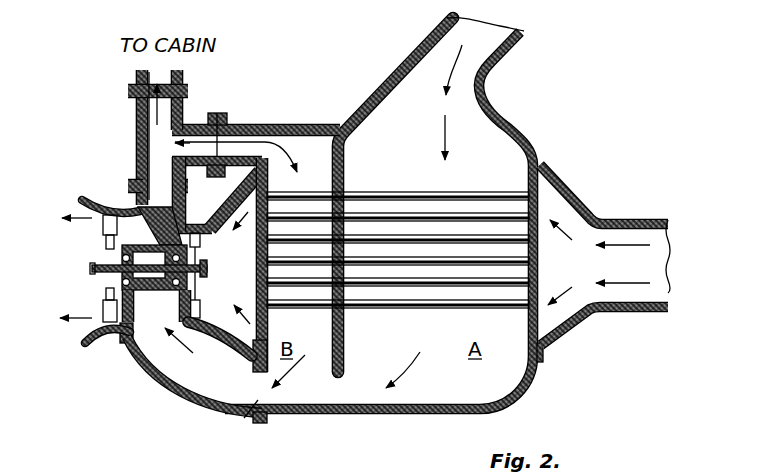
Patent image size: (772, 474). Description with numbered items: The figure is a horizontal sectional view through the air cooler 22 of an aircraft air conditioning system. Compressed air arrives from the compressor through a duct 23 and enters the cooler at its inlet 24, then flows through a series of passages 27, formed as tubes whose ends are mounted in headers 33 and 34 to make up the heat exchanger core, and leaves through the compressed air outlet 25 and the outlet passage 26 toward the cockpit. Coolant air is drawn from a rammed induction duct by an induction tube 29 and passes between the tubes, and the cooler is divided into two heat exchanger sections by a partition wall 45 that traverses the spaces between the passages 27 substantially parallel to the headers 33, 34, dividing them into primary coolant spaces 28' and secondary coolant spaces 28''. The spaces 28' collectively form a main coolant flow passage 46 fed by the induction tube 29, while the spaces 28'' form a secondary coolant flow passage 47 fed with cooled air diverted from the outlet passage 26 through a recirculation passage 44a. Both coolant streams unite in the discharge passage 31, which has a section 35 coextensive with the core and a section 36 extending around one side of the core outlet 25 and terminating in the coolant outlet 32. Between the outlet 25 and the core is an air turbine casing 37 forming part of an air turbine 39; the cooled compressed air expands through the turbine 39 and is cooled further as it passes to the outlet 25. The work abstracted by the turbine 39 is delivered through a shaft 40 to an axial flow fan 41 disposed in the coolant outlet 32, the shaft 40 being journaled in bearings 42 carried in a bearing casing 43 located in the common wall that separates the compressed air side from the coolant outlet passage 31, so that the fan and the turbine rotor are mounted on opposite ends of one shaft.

The air cooler 22 is at (426, 416).
The duct 23 is at (628, 220).
The inlet 24 is at (562, 208).
The outlet 25 is at (128, 188).
The compressed air outlet passage 26 is at (138, 80).
The passages 27 is at (474, 192).
The primary coolant spaces 28' is at (415, 184).
The secondary coolant spaces 28'' is at (258, 172).
The induction tube 29 is at (386, 80).
The discharge passage 31 is at (247, 412).
The coolant outlet 32 is at (80, 203).
The header 33 is at (540, 268).
The header 34 is at (257, 252).
The discharge passage section 35 is at (352, 412).
The discharge passage section 36 is at (160, 356).
The air turbine casing 37 is at (198, 225).
The air turbine 39 is at (190, 330).
The shaft 40 is at (91, 268).
The axial flow fan 41 is at (103, 226).
The bearings 42 is at (118, 280).
The bearing casing 43 is at (118, 336).
The recirculation passage 44a is at (246, 128).
The partition wall 45 is at (345, 176).
The main coolant flow passage 46 is at (383, 353).
The secondary coolant flow passage 47 is at (322, 352).